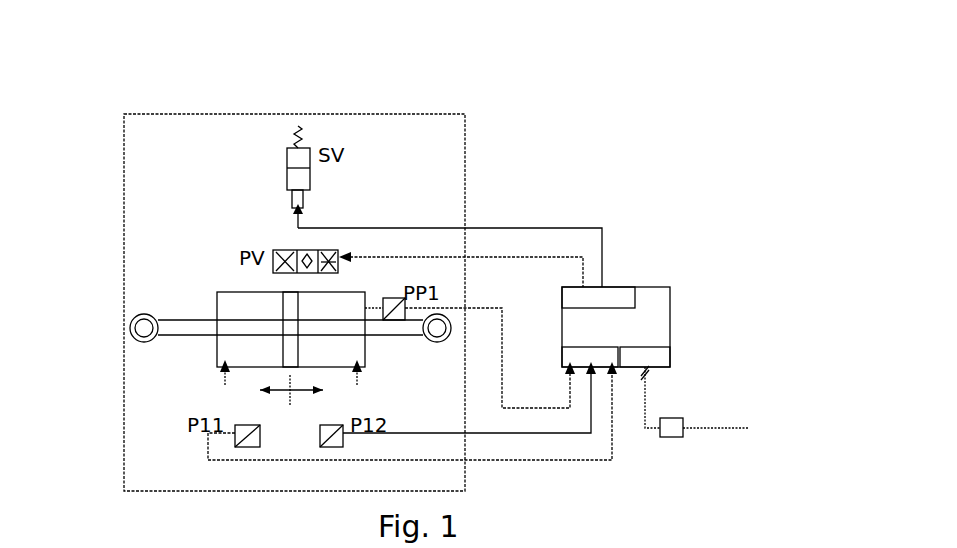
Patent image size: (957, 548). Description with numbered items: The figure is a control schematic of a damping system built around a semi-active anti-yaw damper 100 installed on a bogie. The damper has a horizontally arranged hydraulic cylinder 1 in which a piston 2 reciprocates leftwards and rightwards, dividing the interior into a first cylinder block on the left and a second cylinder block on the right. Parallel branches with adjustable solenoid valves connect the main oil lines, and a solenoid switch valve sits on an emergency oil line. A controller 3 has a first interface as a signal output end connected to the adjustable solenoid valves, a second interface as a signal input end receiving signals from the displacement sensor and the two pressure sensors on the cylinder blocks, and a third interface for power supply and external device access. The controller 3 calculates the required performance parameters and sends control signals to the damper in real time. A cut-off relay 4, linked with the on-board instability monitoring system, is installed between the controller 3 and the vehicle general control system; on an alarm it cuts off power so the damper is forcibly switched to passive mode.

The semi-active anti-yaw damper 100 is at (443, 115).
The hydraulic cylinder 1 is at (230, 306).
The piston 2 is at (295, 340).
The controller 3 is at (652, 320).
The cut-off relay 4 is at (672, 427).